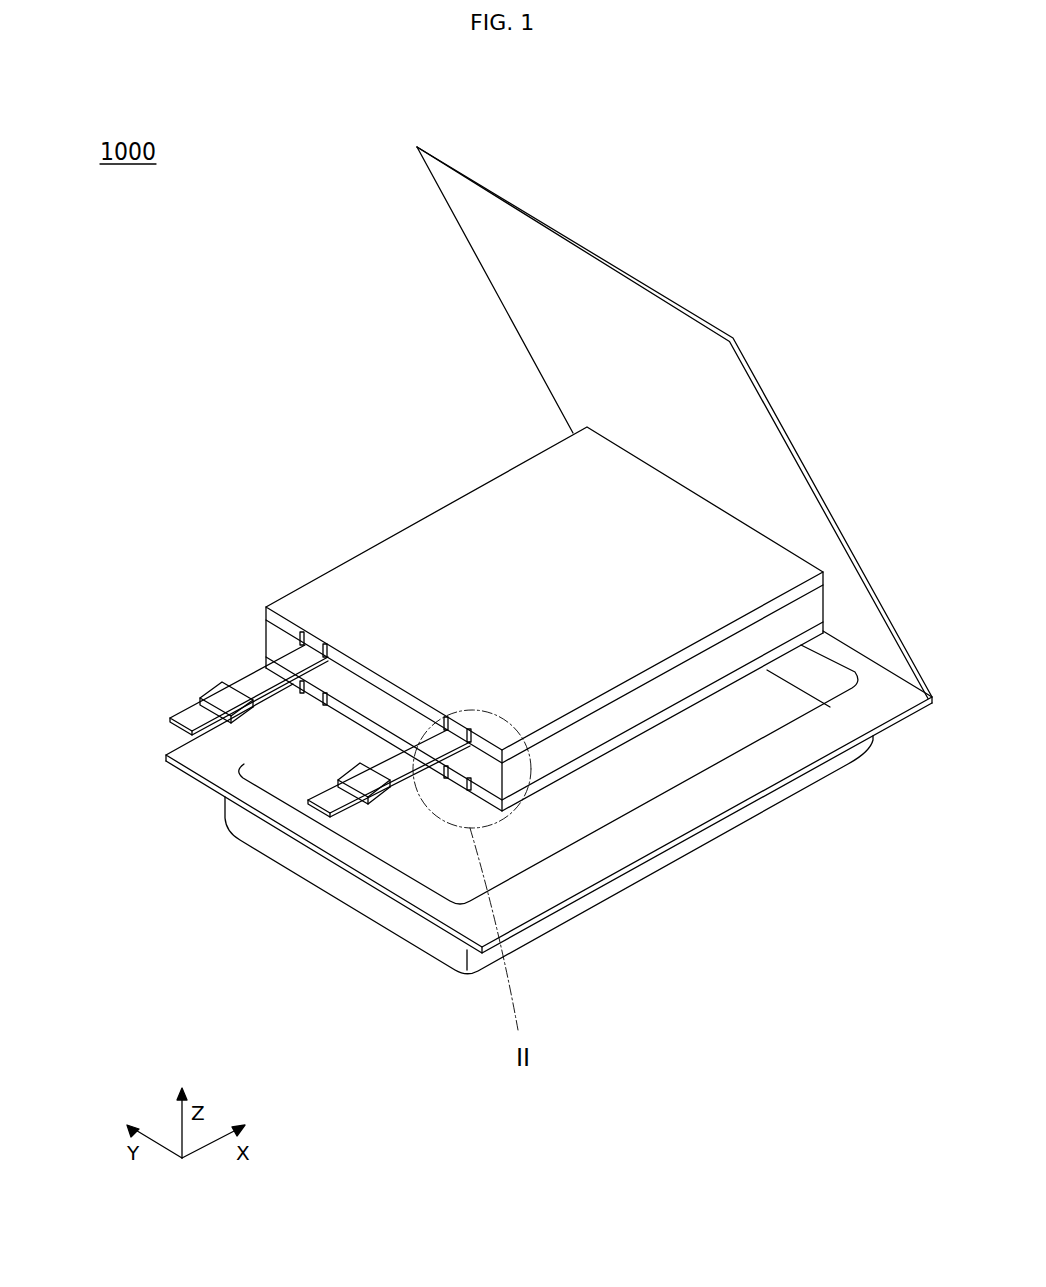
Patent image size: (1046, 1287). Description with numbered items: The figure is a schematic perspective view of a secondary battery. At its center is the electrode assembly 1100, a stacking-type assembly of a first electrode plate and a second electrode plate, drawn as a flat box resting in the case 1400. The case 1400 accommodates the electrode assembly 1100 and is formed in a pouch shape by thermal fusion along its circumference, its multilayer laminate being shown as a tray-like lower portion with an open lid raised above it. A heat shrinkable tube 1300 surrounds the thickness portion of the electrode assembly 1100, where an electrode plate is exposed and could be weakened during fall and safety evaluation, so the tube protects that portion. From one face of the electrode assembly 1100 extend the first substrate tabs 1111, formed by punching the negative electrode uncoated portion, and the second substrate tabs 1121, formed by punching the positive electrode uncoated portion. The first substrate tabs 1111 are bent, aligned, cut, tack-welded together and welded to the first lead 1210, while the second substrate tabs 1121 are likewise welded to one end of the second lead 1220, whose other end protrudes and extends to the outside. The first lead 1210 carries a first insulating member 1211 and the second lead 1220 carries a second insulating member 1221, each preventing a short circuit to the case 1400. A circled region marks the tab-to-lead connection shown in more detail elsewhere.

The electrode assembly 1100 is at (519, 603).
The first substrate tab 1111 is at (466, 745).
The second substrate tab 1121 is at (322, 642).
The first lead 1210 is at (297, 843).
The first insulating member 1211 is at (330, 772).
The second lead 1220 is at (196, 665).
The second insulating member 1221 is at (218, 685).
The heat shrinkable tube 1300 is at (597, 735).
The case 1400 is at (755, 767).